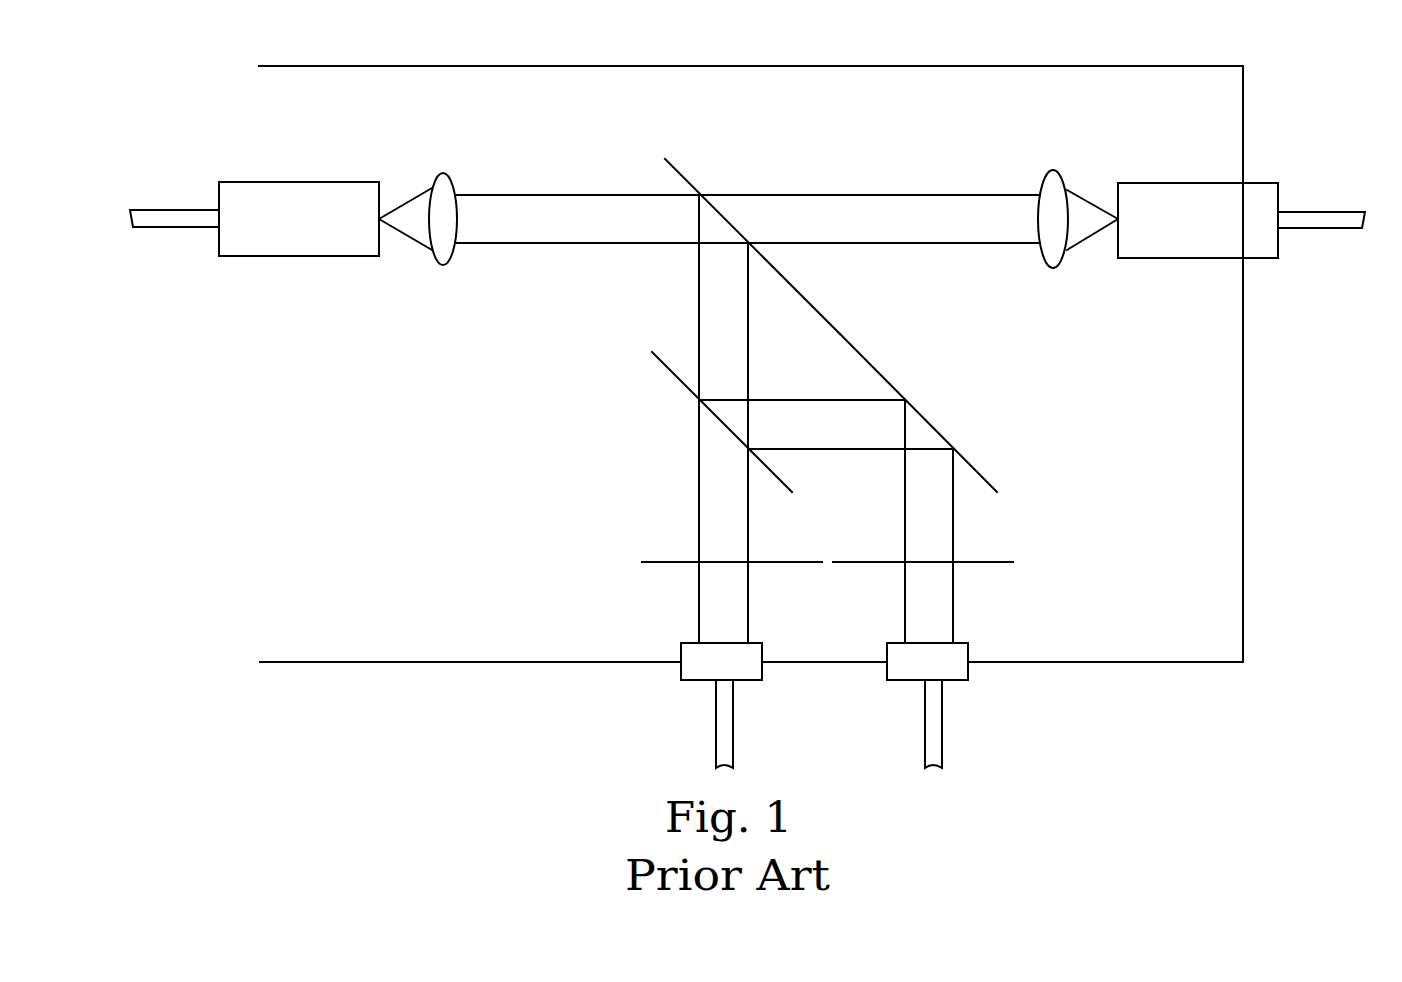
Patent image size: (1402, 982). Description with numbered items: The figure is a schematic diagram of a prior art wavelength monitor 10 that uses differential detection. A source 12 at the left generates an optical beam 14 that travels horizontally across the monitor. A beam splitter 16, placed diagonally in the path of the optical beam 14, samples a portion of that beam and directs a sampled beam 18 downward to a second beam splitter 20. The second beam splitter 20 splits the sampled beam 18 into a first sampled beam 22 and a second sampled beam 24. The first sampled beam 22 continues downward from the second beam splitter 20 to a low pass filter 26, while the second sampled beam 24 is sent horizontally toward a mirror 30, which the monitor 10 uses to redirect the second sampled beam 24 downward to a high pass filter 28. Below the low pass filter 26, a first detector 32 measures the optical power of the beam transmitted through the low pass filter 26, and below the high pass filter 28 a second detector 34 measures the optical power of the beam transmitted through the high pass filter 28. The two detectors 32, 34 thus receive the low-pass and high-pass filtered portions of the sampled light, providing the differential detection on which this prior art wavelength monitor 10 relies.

The wavelength monitor 10 is at (751, 339).
The source 12 is at (281, 195).
The optical beam 14 is at (748, 195).
The beam splitter 16 is at (749, 227).
The sampled beam 18 is at (698, 322).
The second beam splitter 20 is at (698, 422).
The first sampled beam 22 is at (698, 521).
The second sampled beam 24 is at (826, 400).
The low pass filter 26 is at (714, 585).
The high pass filter 28 is at (923, 585).
The mirror 30 is at (918, 488).
The first detector 32 is at (697, 705).
The second detector 34 is at (948, 705).